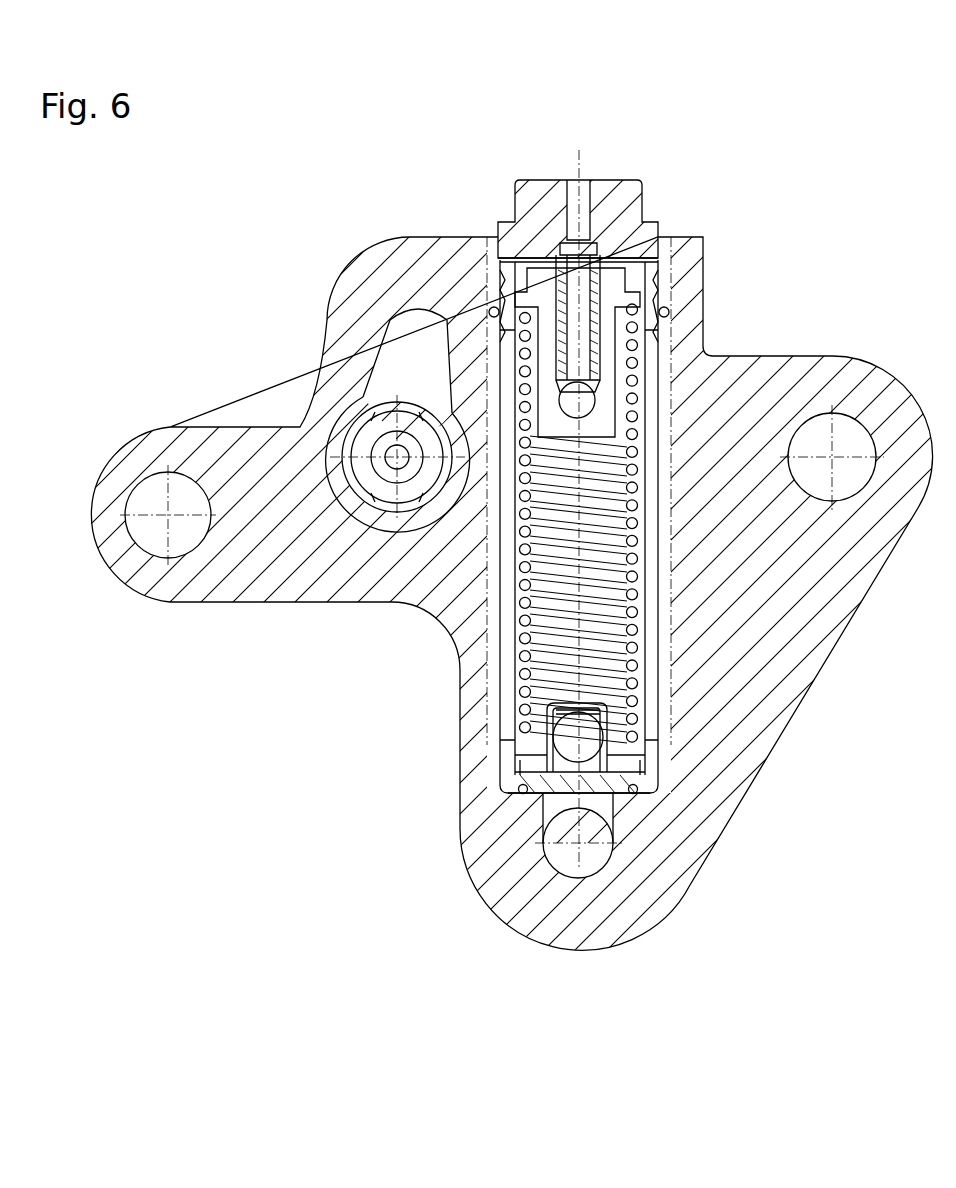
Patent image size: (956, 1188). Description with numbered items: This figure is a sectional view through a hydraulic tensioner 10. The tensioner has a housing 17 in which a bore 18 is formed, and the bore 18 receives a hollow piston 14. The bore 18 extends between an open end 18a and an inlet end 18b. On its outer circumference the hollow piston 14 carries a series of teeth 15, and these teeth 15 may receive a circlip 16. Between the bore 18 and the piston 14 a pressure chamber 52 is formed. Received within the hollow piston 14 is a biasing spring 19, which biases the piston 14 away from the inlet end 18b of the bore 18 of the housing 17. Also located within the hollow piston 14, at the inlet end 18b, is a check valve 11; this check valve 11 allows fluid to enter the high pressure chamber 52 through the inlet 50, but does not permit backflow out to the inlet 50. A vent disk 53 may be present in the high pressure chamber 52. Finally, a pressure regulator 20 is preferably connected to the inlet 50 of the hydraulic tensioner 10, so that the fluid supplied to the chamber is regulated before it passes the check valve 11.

The hydraulic tensioner 10 is at (622, 128).
The check valve 11 is at (584, 741).
The hollow piston 14 is at (643, 201).
The teeth 15 is at (656, 292).
The circlip 16 is at (666, 310).
The housing 17 is at (780, 355).
The bore 18 is at (488, 302).
The open end 18a is at (494, 233).
The inlet end 18b is at (632, 797).
The biasing spring 19 is at (528, 601).
The pressure regulator 20 is at (353, 423).
The inlet 50 is at (588, 847).
The pressure chamber 52 is at (513, 722).
The vent disk 53 is at (580, 292).